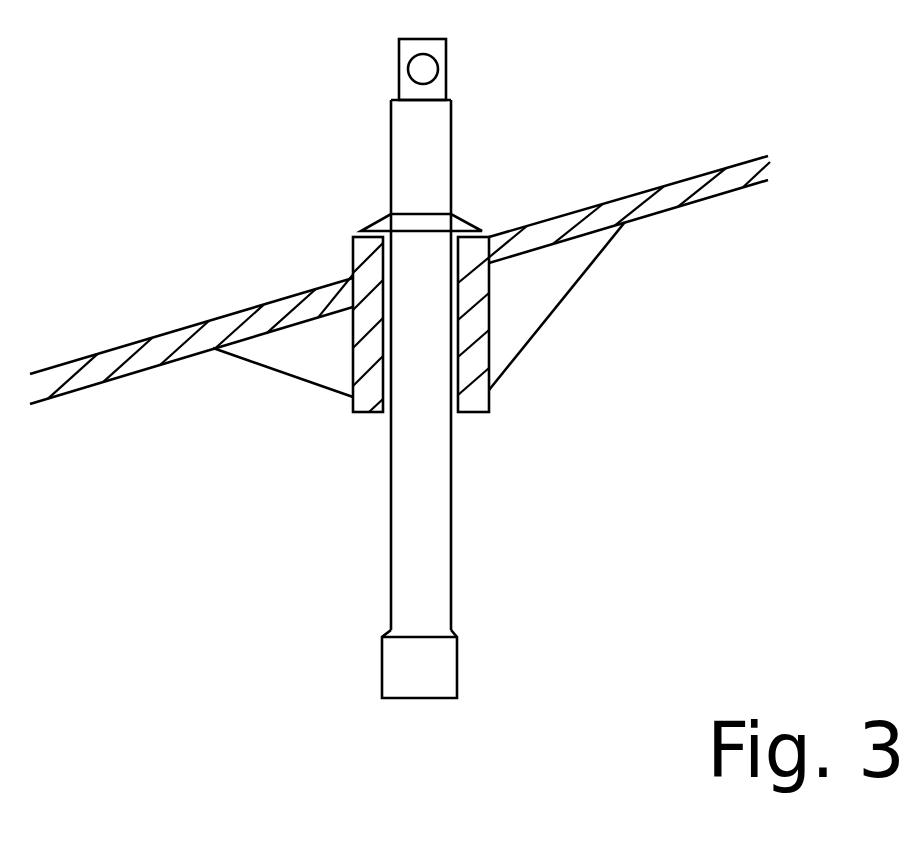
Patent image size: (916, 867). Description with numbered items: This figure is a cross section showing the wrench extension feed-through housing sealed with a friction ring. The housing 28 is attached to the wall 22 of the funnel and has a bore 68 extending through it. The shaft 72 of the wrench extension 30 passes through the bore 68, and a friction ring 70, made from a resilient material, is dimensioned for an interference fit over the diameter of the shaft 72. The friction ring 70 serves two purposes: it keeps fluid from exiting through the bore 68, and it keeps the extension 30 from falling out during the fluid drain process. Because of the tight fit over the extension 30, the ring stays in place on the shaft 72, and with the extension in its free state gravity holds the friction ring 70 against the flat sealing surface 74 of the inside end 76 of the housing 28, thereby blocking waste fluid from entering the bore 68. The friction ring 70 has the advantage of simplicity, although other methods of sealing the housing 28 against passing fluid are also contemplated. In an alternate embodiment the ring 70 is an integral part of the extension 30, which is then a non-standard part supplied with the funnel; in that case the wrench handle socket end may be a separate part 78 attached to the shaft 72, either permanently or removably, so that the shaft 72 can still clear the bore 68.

The wall 22 is at (708, 198).
The housing 28 is at (489, 302).
The wrench extension 30 is at (437, 400).
The bore 68 is at (453, 373).
The friction ring 70 is at (386, 214).
The shaft 72 is at (408, 536).
The flat sealing surface 74 is at (353, 236).
The inside end 76 is at (423, 262).
The separate part 78 is at (442, 672).